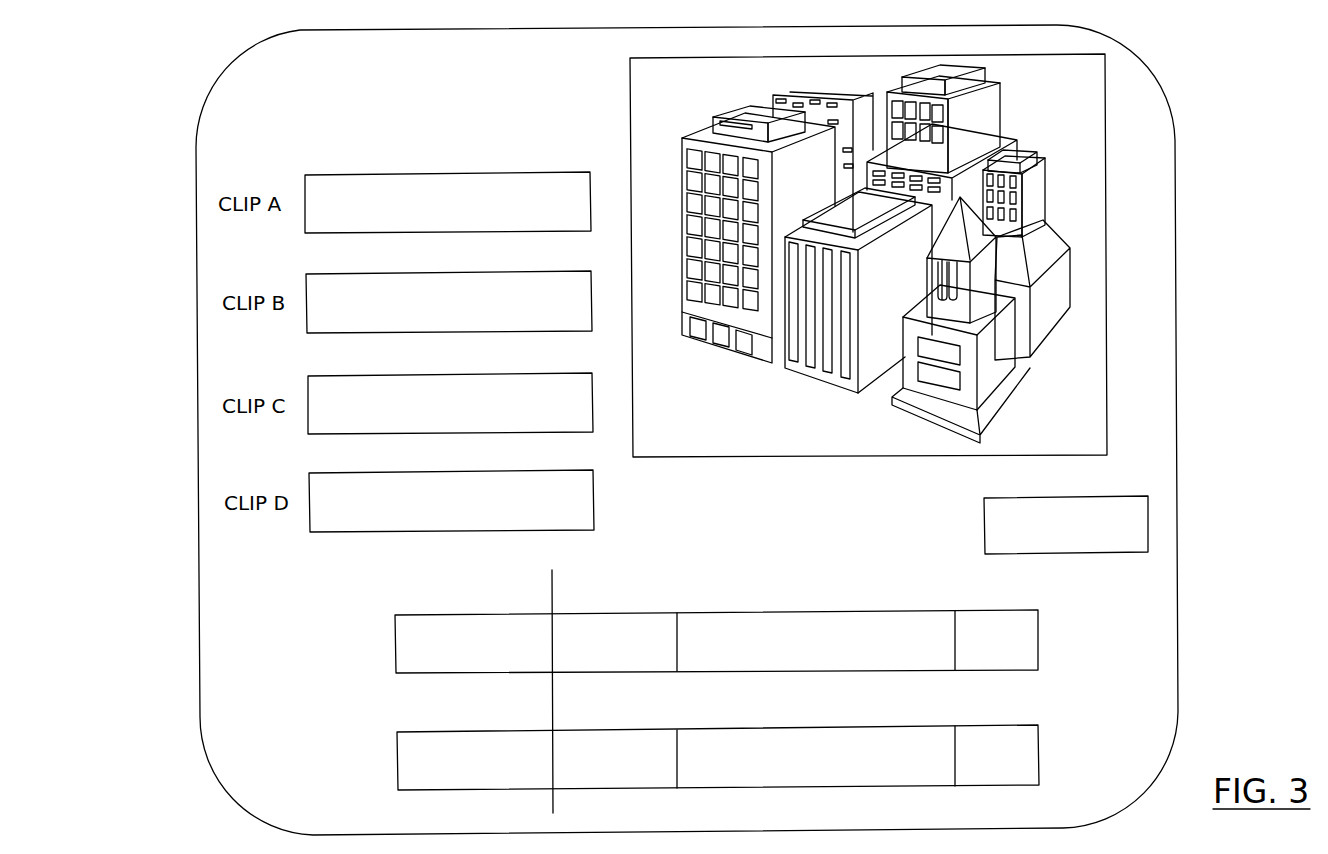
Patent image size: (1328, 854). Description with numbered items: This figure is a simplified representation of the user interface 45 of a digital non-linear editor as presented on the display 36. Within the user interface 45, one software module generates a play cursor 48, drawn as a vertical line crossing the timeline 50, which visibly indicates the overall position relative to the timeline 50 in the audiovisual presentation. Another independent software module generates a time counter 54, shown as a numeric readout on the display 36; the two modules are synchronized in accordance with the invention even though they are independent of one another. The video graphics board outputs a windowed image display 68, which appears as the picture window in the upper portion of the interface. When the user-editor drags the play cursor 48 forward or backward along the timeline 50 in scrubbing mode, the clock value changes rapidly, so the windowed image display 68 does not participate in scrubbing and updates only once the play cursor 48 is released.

The display 36 is at (258, 97).
The user interface 45 is at (712, 430).
The windowed image display 68 is at (1093, 138).
The time counter 54 is at (985, 519).
The play cursor 48 is at (553, 603).
The timeline 50 is at (1040, 658).